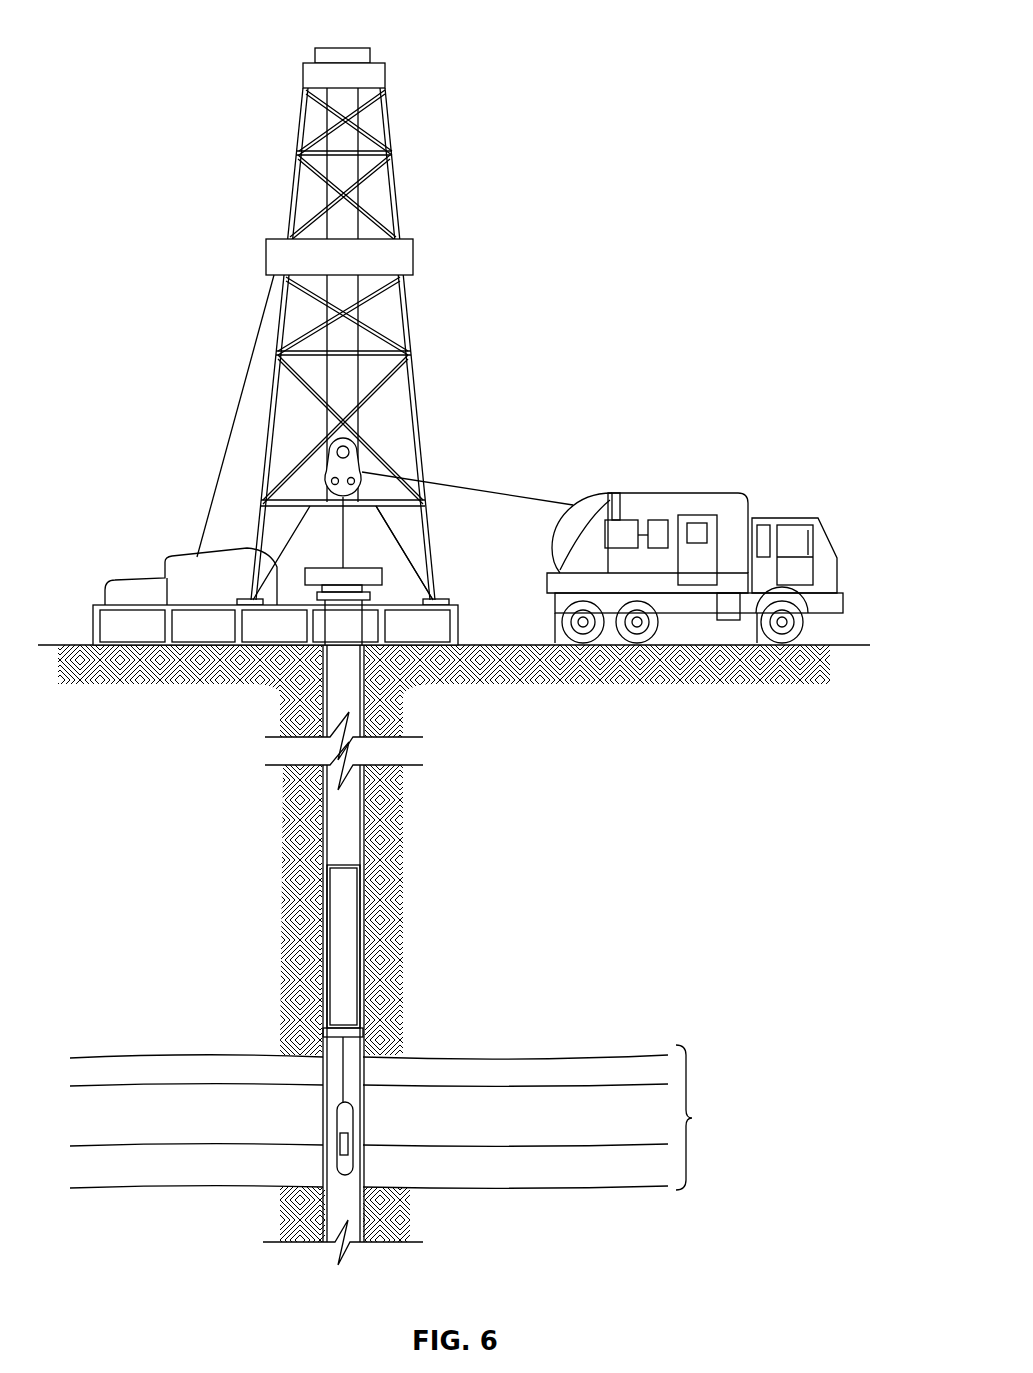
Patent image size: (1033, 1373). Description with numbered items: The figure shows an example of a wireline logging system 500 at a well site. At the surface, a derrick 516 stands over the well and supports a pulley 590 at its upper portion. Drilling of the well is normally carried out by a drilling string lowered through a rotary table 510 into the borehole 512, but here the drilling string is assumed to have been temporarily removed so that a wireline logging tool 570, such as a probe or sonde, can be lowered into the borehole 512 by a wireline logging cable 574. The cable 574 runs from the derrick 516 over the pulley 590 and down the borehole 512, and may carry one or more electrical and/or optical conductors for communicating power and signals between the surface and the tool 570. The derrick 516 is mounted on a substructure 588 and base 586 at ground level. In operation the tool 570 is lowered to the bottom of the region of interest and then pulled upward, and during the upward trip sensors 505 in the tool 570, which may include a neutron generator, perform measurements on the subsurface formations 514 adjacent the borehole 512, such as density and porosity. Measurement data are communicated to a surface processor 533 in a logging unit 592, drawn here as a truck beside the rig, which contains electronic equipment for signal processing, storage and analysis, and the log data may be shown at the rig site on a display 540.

The wireline logging system 500 is at (146, 40).
The derrick 516 is at (398, 192).
The pulley 590 is at (362, 460).
The wireline logging cable 574 is at (467, 487).
The rotary table 510 is at (385, 575).
The substructure 588 is at (442, 582).
The rig floor base 586 is at (455, 625).
The surface processor 533 is at (612, 520).
The logging unit 592 is at (648, 493).
The display 540 is at (697, 523).
The borehole 512 is at (327, 1067).
The subsurface formations 514 is at (410, 1117).
The wireline logging tool 570 is at (353, 1122).
The sensors 505 is at (348, 1147).